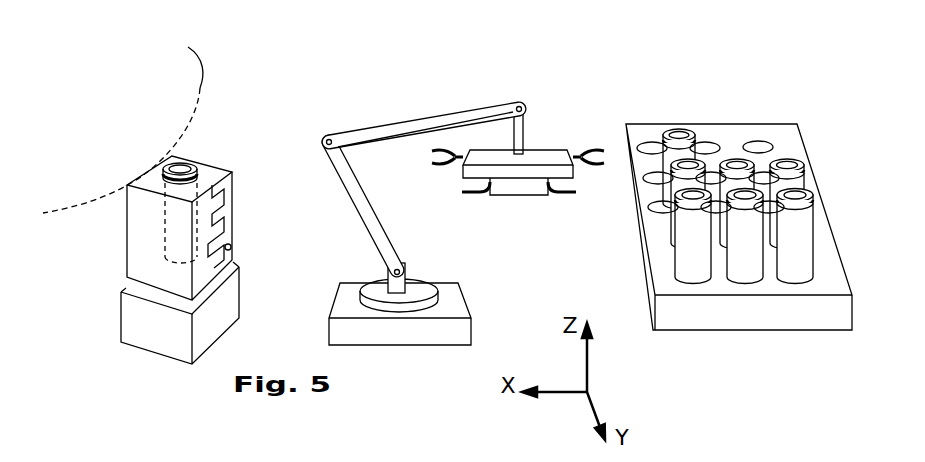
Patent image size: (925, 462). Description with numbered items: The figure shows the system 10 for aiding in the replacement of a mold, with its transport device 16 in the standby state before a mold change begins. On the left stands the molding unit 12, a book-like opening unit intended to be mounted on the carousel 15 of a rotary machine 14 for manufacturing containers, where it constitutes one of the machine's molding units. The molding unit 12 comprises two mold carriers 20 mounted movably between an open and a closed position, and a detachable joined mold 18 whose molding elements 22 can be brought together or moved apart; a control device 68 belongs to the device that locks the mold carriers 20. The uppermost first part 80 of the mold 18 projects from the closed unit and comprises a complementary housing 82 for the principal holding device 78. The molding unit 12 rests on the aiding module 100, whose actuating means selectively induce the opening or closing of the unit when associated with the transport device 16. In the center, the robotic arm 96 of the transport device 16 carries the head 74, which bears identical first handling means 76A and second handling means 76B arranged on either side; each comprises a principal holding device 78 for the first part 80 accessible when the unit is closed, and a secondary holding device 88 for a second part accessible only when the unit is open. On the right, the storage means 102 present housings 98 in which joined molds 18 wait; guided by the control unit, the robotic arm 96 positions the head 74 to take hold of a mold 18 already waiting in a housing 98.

The system for aiding in the replacement of a mold 10 is at (532, 43).
The molding unit 12 is at (95, 259).
The machine for manufacturing containers 14 is at (157, 147).
The carousel 15 is at (193, 70).
The transport device 16 is at (362, 107).
The joined mold 18 is at (170, 263).
The mold carriers 20 is at (230, 196).
The molding elements 22 is at (172, 238).
The control device 68 is at (232, 248).
The head 74 is at (560, 133).
The first handling means 76A is at (588, 200).
The second handling means 76B is at (460, 147).
The principal holding device 78 is at (590, 147).
The first part of the joined mold 80 is at (192, 156).
The complementary housing 82 is at (198, 166).
The secondary holding device 88 is at (467, 193).
The robotic arm 96 is at (407, 128).
The complementary housing 98 is at (758, 147).
The aiding module 100 is at (217, 315).
The storage means 102 is at (739, 217).